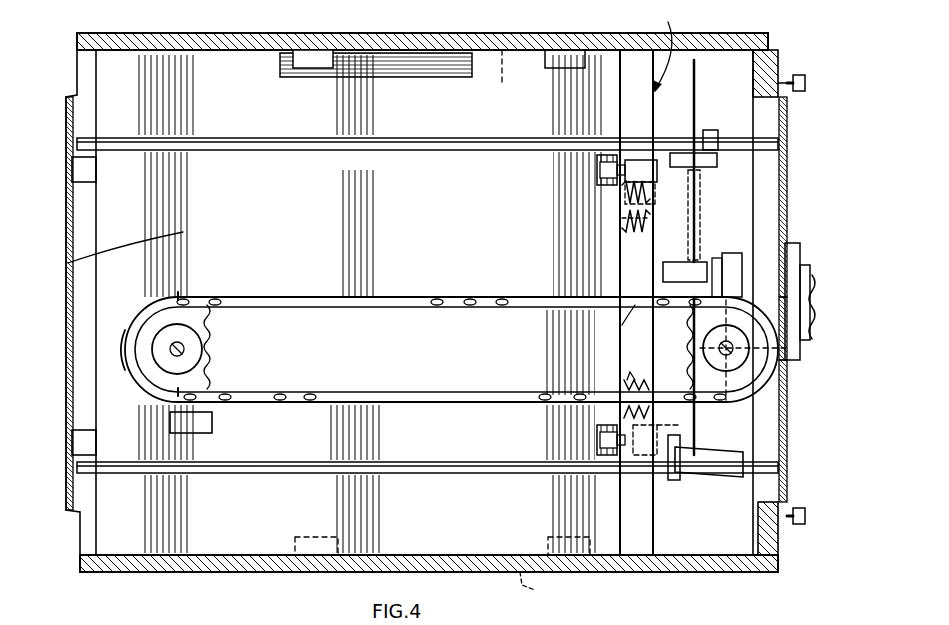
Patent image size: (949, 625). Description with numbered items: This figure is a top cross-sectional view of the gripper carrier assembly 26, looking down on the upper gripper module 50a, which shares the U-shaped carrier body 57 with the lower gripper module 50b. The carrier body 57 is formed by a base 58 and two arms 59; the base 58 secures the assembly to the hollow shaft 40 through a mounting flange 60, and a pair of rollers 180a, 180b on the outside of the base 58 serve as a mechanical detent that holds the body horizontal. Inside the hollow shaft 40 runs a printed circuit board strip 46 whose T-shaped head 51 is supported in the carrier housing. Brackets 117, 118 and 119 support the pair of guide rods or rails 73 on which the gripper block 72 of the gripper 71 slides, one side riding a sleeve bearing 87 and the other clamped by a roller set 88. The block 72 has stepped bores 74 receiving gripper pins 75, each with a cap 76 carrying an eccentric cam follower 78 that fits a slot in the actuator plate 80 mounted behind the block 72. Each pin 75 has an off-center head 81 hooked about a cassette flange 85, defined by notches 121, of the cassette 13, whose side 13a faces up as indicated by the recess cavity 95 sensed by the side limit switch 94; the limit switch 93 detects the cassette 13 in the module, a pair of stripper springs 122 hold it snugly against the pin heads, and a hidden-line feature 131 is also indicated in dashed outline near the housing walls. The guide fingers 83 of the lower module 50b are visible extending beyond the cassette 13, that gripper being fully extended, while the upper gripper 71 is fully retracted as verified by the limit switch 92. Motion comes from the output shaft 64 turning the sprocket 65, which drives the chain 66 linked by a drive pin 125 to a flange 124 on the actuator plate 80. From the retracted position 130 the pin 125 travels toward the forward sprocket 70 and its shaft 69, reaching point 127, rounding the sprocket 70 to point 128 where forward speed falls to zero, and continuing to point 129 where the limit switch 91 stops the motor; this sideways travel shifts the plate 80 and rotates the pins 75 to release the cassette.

The cassette 13 is at (458, 226).
The side of the cassette 13a is at (479, 121).
The gripper carrier assembly 26 is at (213, 590).
The hollow shaft 40 is at (812, 345).
The printed circuit board strip 46 is at (795, 243).
The upper gripper module 50a is at (345, 578).
The lower gripper module 50b is at (429, 598).
The T-shaped head 51 is at (755, 200).
The carrier body 57 is at (778, 50).
The base 58 is at (805, 105).
The arms 59 is at (242, 55).
The mounting flange 60 is at (787, 395).
The output shaft 64 is at (725, 362).
The sprocket 65 is at (693, 335).
The chain 66 is at (500, 307).
The shaft of the sprocket 69 is at (182, 345).
The forward sprocket 70 is at (210, 362).
The gripper 71 is at (660, 48).
The gripper block 72 is at (692, 222).
The rails 73 is at (432, 150).
The stepped bores 74 is at (650, 140).
The gripper pin 75 is at (622, 120).
The cap 76 is at (653, 225).
The cam follower 78 is at (700, 435).
The actuator plate 80 is at (697, 73).
The head 81 is at (597, 170).
The guide finger 83 is at (90, 170).
The flange 85 is at (622, 200).
The sleeve bearing 87 is at (735, 477).
The roller set 88 is at (712, 128).
The limit switch 91 is at (212, 422).
The limit switch 92 is at (663, 272).
The limit switch 93 is at (558, 68).
The limit switch 94 is at (315, 60).
The recess cavity 95 is at (400, 60).
The bracket 117 is at (787, 450).
The bracket 118 is at (787, 160).
The bracket 119 is at (143, 243).
The notches 121 is at (617, 170).
The stripper springs 122 is at (622, 218).
The flange 124 is at (740, 253).
The drive pin 125 is at (741, 350).
The point 127 is at (178, 295).
The point 128 is at (122, 349).
The point 129 is at (178, 392).
The position 130 is at (610, 322).
The hidden line 131 is at (534, 326).
The roller 180a is at (797, 524).
The roller 180b is at (778, 84).